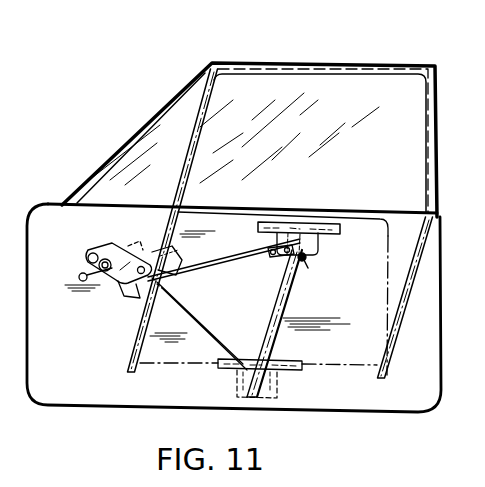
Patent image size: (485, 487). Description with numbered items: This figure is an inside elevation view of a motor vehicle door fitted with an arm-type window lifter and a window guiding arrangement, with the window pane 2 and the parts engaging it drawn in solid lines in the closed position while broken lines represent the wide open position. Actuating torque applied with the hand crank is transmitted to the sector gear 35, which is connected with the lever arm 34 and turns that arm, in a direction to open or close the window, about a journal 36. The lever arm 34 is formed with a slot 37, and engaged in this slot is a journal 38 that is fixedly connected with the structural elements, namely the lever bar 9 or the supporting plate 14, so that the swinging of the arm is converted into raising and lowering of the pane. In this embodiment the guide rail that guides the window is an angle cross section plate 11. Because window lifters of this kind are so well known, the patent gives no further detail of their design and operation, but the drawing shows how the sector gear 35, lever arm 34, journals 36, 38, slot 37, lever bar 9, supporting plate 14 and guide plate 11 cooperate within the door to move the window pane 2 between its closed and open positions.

The window glass 2 is at (345, 82).
The lever bar 9 is at (334, 233).
The angle cross section plate 11 is at (275, 306).
The supporting plate 14 is at (308, 259).
The lever arm 34 is at (200, 266).
The sector gear 35 is at (122, 292).
The journal 36 is at (143, 267).
The slot 37 is at (275, 257).
The journal 38 is at (303, 263).